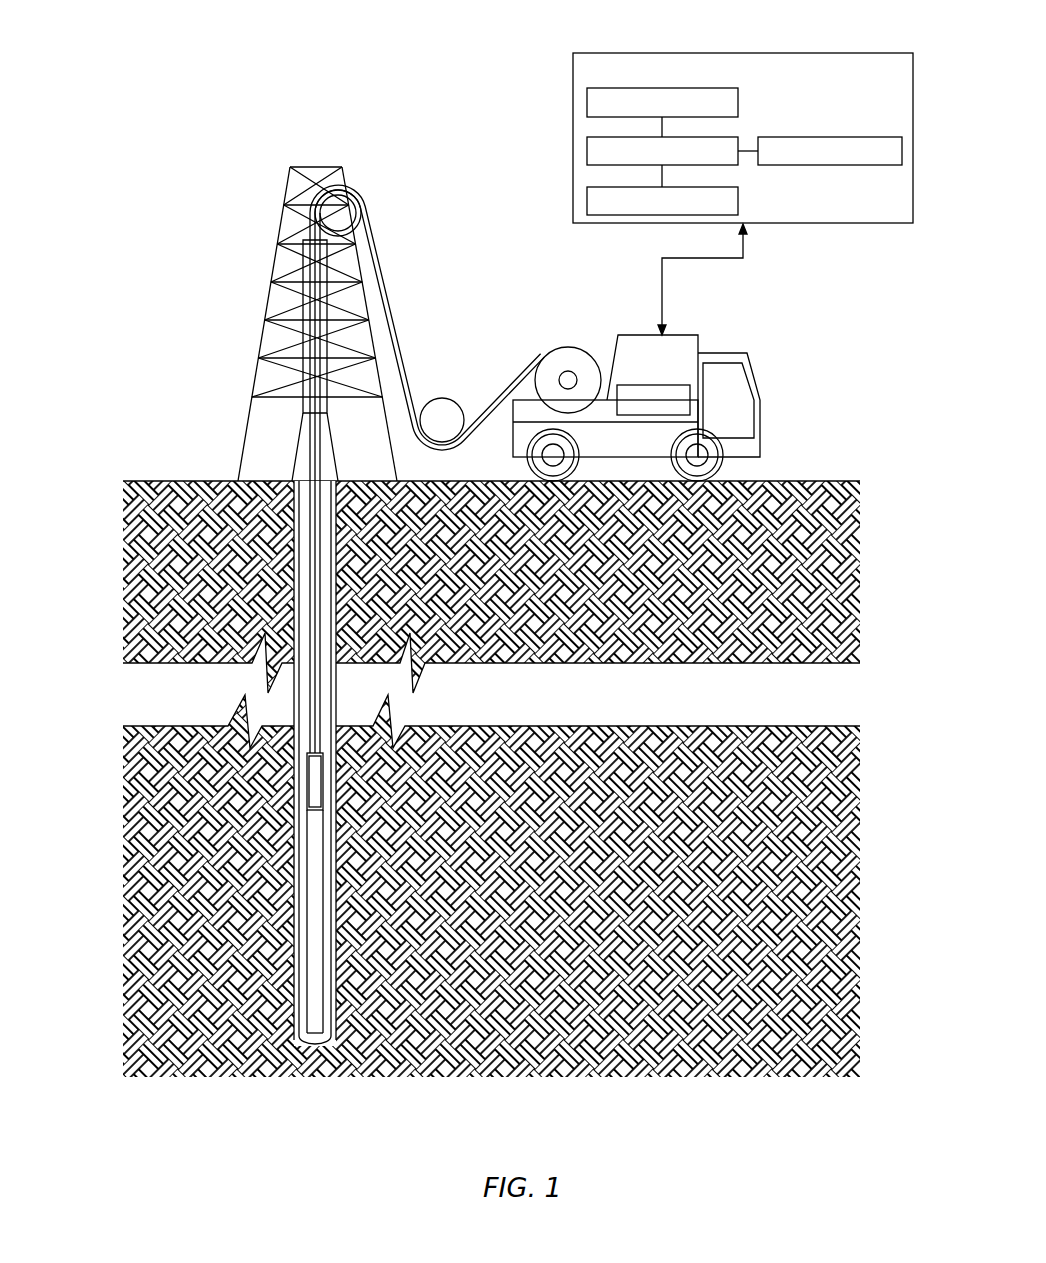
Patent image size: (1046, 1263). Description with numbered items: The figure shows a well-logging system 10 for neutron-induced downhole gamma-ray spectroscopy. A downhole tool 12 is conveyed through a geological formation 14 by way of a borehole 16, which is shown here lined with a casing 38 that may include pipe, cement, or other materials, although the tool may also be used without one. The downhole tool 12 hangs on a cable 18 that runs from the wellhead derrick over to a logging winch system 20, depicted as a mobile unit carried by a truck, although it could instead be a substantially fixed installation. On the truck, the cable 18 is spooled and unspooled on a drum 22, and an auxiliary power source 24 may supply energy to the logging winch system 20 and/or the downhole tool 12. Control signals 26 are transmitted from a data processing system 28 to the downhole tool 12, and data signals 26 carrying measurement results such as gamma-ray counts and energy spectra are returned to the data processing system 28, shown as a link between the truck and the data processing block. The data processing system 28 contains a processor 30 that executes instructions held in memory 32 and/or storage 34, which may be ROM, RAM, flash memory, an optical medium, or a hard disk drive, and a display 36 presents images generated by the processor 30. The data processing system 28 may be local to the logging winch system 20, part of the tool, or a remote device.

The well-logging system 10 is at (195, 219).
The downhole tool 12 is at (284, 758).
The geological formation 14 is at (137, 830).
The borehole 16 is at (288, 540).
The cable 18 is at (414, 315).
The logging winch system 20 is at (628, 366).
The drum 22 is at (557, 350).
The auxiliary power source 24 is at (653, 385).
The control signals 26 is at (746, 253).
The data processing system 28 is at (720, 122).
The processor 30 is at (717, 137).
The memory 32 is at (588, 100).
The storage 34 is at (733, 198).
The display 36 is at (830, 137).
The casing 38 is at (285, 1002).